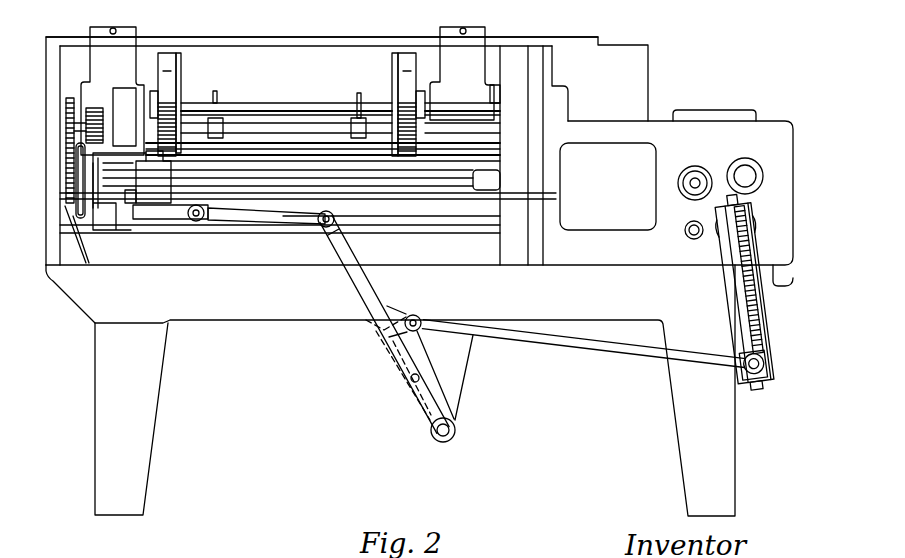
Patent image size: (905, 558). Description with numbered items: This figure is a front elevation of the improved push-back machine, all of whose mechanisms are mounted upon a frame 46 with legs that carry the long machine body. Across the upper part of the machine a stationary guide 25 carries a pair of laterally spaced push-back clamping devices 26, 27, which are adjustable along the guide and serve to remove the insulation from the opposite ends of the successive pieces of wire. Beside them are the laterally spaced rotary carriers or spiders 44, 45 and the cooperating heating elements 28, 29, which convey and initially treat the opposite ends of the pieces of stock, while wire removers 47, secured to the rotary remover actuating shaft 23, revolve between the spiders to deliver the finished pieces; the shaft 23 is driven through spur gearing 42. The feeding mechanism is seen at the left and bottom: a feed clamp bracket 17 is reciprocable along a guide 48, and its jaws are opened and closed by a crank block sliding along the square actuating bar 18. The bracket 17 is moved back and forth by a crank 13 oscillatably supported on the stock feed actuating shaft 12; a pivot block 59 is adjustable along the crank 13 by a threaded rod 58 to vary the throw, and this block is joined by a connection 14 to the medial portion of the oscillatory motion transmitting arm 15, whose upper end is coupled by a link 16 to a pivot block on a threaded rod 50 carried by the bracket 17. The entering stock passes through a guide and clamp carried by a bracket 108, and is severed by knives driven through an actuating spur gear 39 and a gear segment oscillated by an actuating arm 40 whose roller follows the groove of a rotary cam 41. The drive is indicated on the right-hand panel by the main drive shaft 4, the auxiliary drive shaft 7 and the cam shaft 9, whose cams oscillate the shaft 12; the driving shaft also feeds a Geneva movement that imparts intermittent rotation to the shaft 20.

The main drive shaft 4 is at (683, 229).
The auxiliary drive shaft 7 is at (692, 176).
The cam shaft 9 is at (742, 170).
The stock feed actuating shaft 12 is at (748, 233).
The crank 13 is at (730, 296).
The connection 14 is at (567, 340).
The motion transmitting arm 15 is at (360, 290).
The link 16 is at (270, 218).
The feed clamp bracket 17 is at (166, 185).
The square actuating bar 18 is at (553, 193).
The shaft 20 is at (293, 99).
The remover actuating shaft 23 is at (235, 124).
The stationary guide 25 is at (316, 14).
The push-back clamping device 26 is at (112, 91).
The push-back clamping device 27 is at (462, 73).
The heating element 28 is at (163, 50).
The heating element 29 is at (405, 55).
The actuating spur gear 39 is at (88, 108).
The actuating arm 40 is at (80, 207).
The rotary cam 41 is at (62, 202).
The spur gearing 42 is at (67, 96).
The rotary carrier spider 44 is at (178, 62).
The rotary carrier spider 45 is at (389, 57).
The frame 46 is at (200, 302).
The wire remover 47 is at (355, 92).
The guide 48 is at (430, 218).
The threaded rod 50 is at (174, 214).
The threaded rod 58 is at (752, 322).
The pivot block 59 is at (762, 364).
The bracket 108 is at (108, 206).